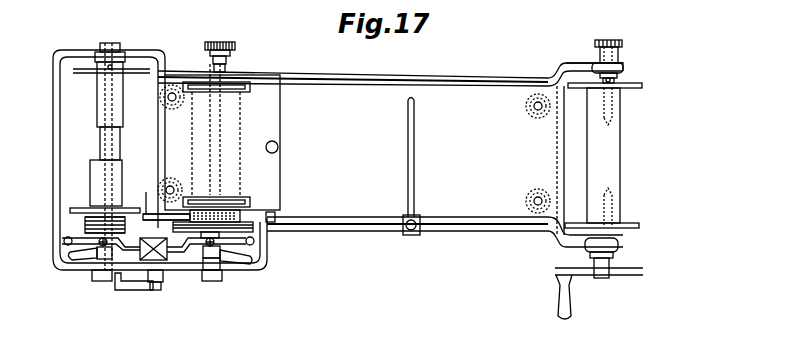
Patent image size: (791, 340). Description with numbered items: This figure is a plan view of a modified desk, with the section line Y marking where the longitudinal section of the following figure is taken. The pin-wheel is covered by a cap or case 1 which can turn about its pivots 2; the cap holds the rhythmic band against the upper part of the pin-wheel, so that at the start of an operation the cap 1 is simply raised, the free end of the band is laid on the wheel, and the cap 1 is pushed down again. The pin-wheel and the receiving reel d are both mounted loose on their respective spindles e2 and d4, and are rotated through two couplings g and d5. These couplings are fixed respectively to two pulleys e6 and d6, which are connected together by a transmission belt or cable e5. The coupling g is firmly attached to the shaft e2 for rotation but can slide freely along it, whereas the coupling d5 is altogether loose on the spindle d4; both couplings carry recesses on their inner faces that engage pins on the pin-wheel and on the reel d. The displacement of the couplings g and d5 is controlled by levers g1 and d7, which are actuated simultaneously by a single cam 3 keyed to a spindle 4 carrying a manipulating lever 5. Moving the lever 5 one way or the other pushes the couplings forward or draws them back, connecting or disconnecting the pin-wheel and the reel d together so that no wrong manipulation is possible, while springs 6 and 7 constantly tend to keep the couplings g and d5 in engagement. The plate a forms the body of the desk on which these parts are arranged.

The section line Y— Y is at (52, 143).
The pivots 2 is at (167, 65).
The main frame plate a is at (479, 155).
The cap or case 1 is at (219, 142).
The spindle of the pin-wheel e2 is at (222, 68).
The receiving reel d is at (120, 107).
The spindle of the receiving reel d4 is at (114, 143).
The coupling of the receiving reel d5 is at (86, 208).
The pulley of the receiving reel d6 is at (92, 230).
The lever controlling the reel coupling d7 is at (135, 262).
The cam 3 is at (156, 247).
The spring 6 is at (90, 258).
The spring 7 is at (232, 260).
The manipulating lever 5 is at (130, 270).
The spindle of the cam 4 is at (160, 283).
The transmission belt or cable e5 is at (147, 214).
The coupling of the pin-wheel g is at (246, 211).
The lever controlling the pin-wheel coupling g1 is at (206, 258).
The pulley of the pin-wheel e6 is at (268, 246).